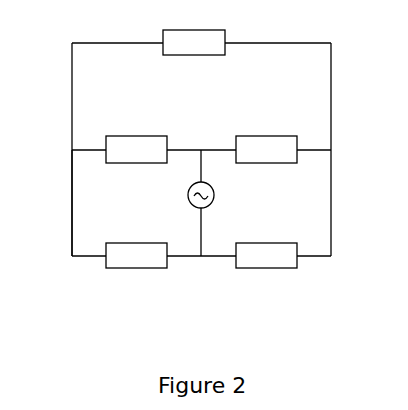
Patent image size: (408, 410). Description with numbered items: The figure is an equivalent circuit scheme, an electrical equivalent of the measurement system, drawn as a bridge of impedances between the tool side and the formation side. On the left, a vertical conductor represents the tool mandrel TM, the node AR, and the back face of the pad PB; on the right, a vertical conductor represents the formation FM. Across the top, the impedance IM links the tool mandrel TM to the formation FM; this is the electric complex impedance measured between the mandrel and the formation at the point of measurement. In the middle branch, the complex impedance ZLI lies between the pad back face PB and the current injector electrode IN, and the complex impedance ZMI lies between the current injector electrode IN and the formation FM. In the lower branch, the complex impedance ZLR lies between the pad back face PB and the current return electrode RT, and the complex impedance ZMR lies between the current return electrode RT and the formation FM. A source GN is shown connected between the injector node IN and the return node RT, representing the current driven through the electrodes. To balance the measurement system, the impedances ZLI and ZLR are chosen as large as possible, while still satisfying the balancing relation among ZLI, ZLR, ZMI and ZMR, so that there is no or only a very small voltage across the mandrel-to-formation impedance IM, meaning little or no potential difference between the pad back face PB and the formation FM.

The electric complex impedance between tool mandrel and formation IM is at (194, 30).
The tool mandrel TM is at (56, 149).
The node AR is at (74, 159).
The pad back face PB is at (74, 203).
The formation FM is at (327, 149).
The complex impedance between current injector electrode and pad back face ZLI is at (136, 140).
The complex impedance between current injector electrode and formation ZMI is at (266, 140).
The current injector electrode IN is at (201, 155).
The generator GN is at (215, 195).
The current return electrode RT is at (201, 247).
The complex impedance between current return electrode and pad back face ZLR is at (136, 244).
The complex impedance between current return electrode and formation ZMR is at (266, 244).